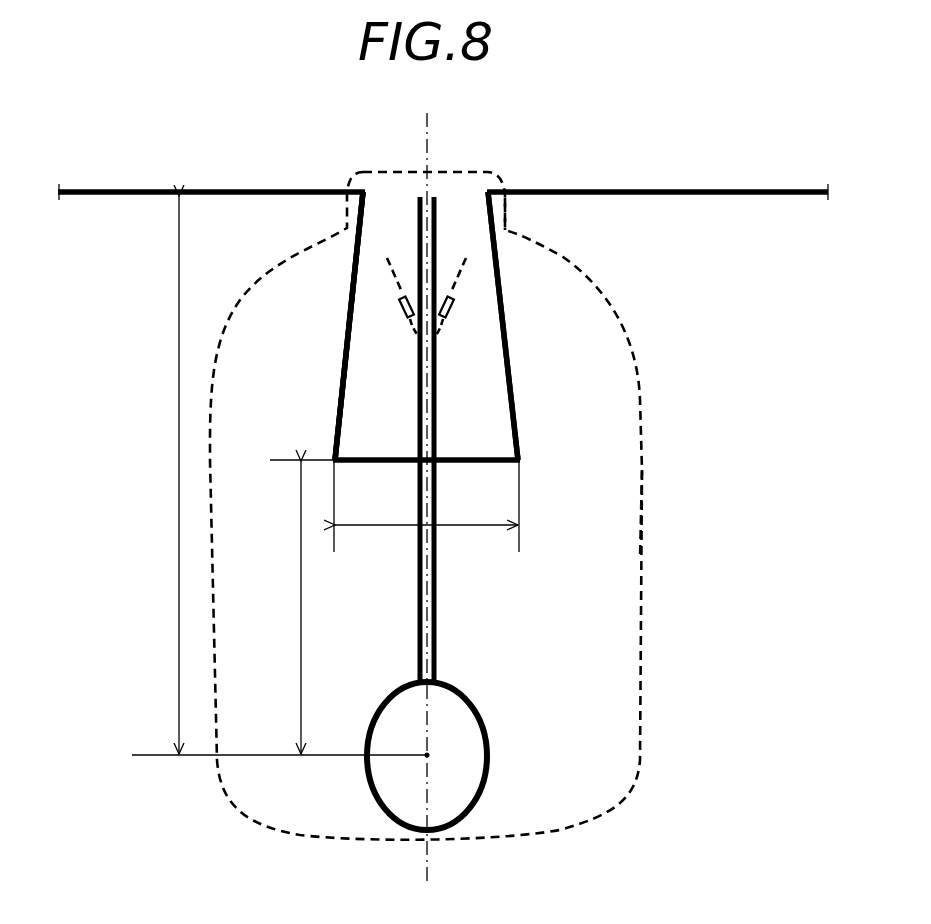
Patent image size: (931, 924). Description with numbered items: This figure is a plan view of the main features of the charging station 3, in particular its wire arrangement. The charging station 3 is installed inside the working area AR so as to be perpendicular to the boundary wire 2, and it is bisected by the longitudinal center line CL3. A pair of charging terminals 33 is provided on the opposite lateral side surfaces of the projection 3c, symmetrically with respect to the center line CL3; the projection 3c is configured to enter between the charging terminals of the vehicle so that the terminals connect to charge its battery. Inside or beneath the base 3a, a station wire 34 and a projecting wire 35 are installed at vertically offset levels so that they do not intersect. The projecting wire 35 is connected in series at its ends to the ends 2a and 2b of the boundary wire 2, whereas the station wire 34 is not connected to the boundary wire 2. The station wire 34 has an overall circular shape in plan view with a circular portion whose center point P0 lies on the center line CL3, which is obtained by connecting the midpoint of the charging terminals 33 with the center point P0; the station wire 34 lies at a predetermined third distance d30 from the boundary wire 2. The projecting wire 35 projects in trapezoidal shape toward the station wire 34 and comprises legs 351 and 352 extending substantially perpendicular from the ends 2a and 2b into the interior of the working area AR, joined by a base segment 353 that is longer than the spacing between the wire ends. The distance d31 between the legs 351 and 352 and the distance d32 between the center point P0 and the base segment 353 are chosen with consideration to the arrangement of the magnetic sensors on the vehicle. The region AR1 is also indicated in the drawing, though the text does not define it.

The boundary wire 2 is at (707, 189).
The end of boundary wire 2a is at (363, 189).
The end of boundary wire 2b is at (486, 189).
The charging station 3 is at (672, 368).
The base 3a is at (645, 478).
The projection 3c is at (462, 263).
The charging terminals 33 is at (401, 305).
The station wire 34 is at (460, 820).
The projecting wire 35 is at (516, 422).
The wire segment (leg) 351 is at (333, 432).
The wire segment (leg) 352 is at (508, 361).
The wire segment (base) 353 is at (376, 466).
The working area AR is at (725, 263).
The inner region AR1 is at (371, 368).
The center point P0 is at (427, 755).
The center line CL3 is at (426, 515).
The third distance d30 is at (275, 475).
The distance d31 is at (426, 509).
The distance d32 is at (289, 607).